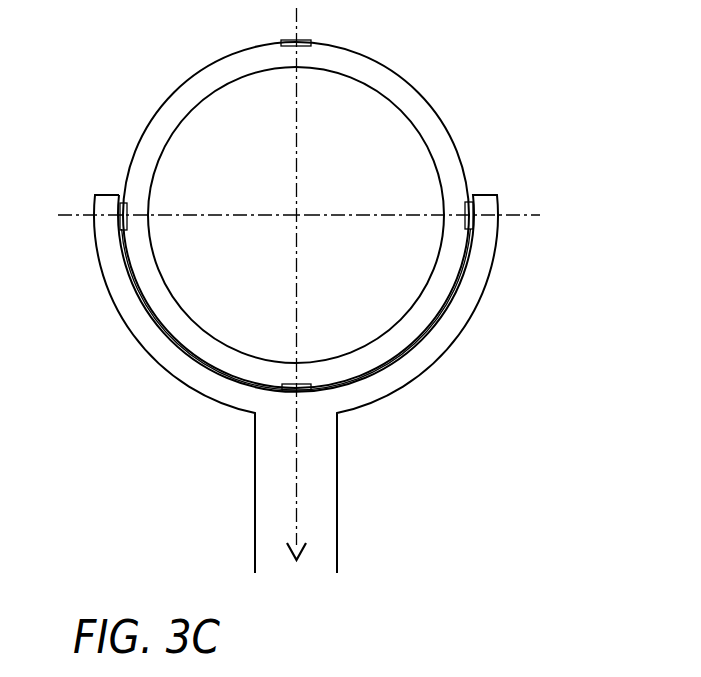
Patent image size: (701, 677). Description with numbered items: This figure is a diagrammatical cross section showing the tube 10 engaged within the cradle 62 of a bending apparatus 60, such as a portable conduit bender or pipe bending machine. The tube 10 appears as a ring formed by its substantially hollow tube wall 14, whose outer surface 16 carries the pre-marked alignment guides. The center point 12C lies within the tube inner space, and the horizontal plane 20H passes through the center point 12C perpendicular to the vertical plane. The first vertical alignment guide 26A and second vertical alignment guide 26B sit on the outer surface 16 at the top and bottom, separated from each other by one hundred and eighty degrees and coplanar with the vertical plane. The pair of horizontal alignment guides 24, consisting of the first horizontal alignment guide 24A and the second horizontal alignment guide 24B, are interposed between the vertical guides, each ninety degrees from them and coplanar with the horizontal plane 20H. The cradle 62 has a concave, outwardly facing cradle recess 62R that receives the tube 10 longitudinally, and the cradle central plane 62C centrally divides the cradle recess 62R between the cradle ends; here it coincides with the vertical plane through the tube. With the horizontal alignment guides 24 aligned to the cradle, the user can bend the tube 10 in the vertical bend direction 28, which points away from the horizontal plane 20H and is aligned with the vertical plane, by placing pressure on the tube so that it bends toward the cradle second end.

The tube 10 is at (280, 223).
The outer surface 16 is at (381, 62).
The tube wall 14 is at (396, 98).
The first vertical alignment guide 26A is at (306, 42).
The second vertical alignment guide 26B is at (306, 392).
The horizontal alignment guides 24 is at (106, 175).
The first horizontal alignment guide 24A is at (121, 231).
The second horizontal alignment guide 24B is at (488, 175).
The bending apparatus 60 is at (311, 356).
The cradle 62 is at (479, 284).
The cradle recess 62R is at (182, 352).
The cradle central plane 62C is at (297, 443).
The horizontal plane 20H is at (524, 212).
The center point 12C is at (296, 210).
The vertical bend direction 28 is at (297, 530).